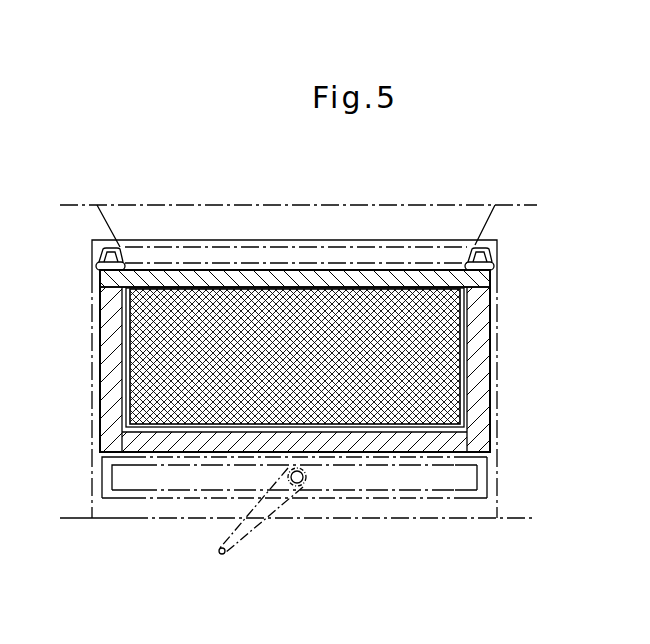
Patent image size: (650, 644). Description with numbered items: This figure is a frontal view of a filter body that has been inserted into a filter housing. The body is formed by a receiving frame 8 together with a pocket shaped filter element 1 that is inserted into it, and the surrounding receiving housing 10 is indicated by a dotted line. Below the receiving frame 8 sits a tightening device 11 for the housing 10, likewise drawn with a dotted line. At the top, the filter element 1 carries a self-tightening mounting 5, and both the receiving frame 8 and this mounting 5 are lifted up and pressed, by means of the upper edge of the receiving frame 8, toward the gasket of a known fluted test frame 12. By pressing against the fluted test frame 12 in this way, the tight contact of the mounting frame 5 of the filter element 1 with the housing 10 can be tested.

The filter element 1 is at (178, 354).
The self-tightening mounting 5 is at (485, 278).
The receiving frame 8 is at (488, 330).
The receiving housing 10 is at (91, 323).
The tightening device 11 is at (127, 480).
The fluted test frame 12 is at (120, 262).